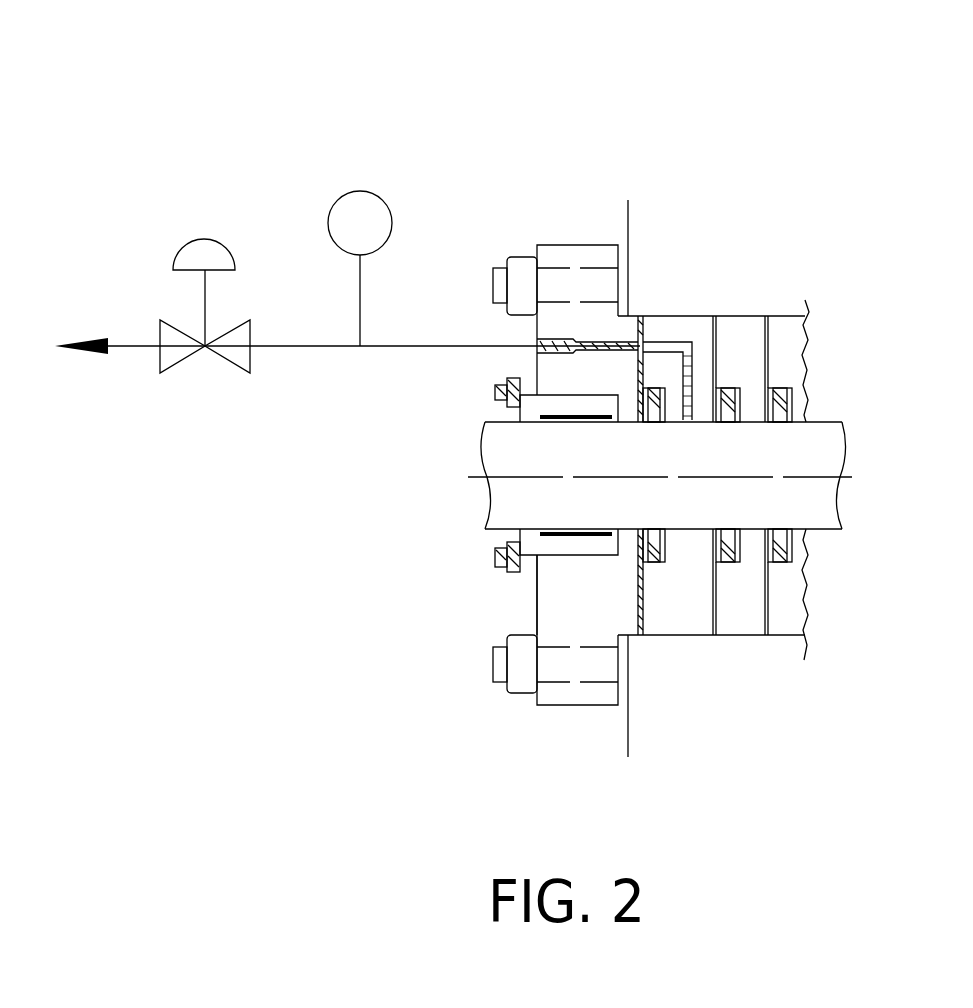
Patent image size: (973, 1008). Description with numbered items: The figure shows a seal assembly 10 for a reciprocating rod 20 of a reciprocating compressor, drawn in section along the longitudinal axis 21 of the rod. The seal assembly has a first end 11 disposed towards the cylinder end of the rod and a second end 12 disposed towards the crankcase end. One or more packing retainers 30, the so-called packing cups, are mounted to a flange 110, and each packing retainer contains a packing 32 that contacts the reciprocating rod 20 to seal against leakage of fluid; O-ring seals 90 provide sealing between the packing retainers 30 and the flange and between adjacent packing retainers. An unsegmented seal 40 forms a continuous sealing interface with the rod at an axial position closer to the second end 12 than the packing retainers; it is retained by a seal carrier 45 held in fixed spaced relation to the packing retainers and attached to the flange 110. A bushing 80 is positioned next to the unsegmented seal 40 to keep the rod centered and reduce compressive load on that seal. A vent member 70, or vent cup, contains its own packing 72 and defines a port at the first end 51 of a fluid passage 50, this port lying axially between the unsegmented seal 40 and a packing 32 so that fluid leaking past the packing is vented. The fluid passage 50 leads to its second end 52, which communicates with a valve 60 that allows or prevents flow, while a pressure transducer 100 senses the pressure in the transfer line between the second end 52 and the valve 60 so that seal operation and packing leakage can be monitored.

The seal assembly 10 is at (855, 90).
The first end 11 is at (860, 608).
The second end 12 is at (337, 528).
The reciprocating rod 20 is at (822, 500).
The longitudinal axis 21 is at (598, 478).
The packing retainer 30 is at (788, 612).
The packing 32 is at (793, 402).
The unsegmented seal 40 is at (618, 423).
The seal carrier 45 is at (567, 407).
The fluid passage 50 is at (632, 345).
The first end 51 is at (683, 422).
The second end 52 is at (536, 345).
The valve 60 is at (232, 352).
The vent member 70 is at (667, 330).
The packing 72 is at (650, 545).
The bushing 80 is at (560, 542).
The O-ring seal 90 is at (727, 413).
The pressure transducer 100 is at (372, 208).
The flange 110 is at (570, 257).